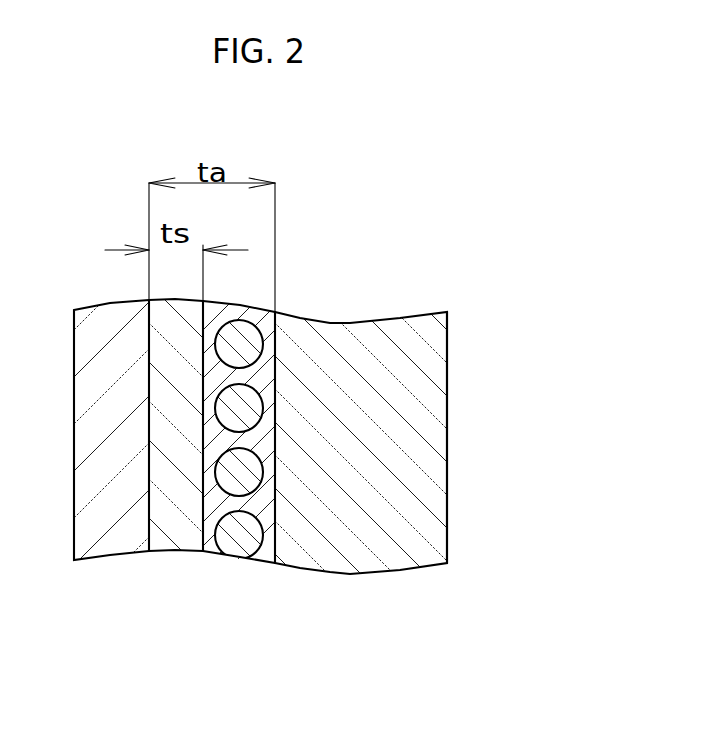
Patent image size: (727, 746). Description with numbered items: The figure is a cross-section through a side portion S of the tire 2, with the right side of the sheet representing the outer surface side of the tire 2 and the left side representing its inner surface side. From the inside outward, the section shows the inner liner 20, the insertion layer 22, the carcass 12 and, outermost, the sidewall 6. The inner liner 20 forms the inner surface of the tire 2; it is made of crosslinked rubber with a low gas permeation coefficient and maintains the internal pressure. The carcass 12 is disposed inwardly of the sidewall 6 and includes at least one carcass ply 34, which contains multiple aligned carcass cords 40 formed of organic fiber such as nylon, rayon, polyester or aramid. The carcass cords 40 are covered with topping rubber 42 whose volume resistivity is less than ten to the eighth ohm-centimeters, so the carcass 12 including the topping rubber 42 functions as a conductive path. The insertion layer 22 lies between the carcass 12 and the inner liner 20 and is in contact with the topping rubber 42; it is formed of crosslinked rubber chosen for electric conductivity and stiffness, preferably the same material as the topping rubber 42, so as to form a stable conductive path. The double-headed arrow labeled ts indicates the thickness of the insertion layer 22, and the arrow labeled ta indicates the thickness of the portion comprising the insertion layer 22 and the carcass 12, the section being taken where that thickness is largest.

The tire 2 is at (424, 280).
The sidewall 6 is at (350, 575).
The carcass 12 is at (293, 457).
The carcass ply 34 is at (293, 473).
The inner liner 20 is at (107, 558).
The insertion layer 22 is at (177, 553).
The carcass cord 40 is at (240, 348).
The topping rubber 42 is at (265, 382).
The side portion S is at (453, 428).